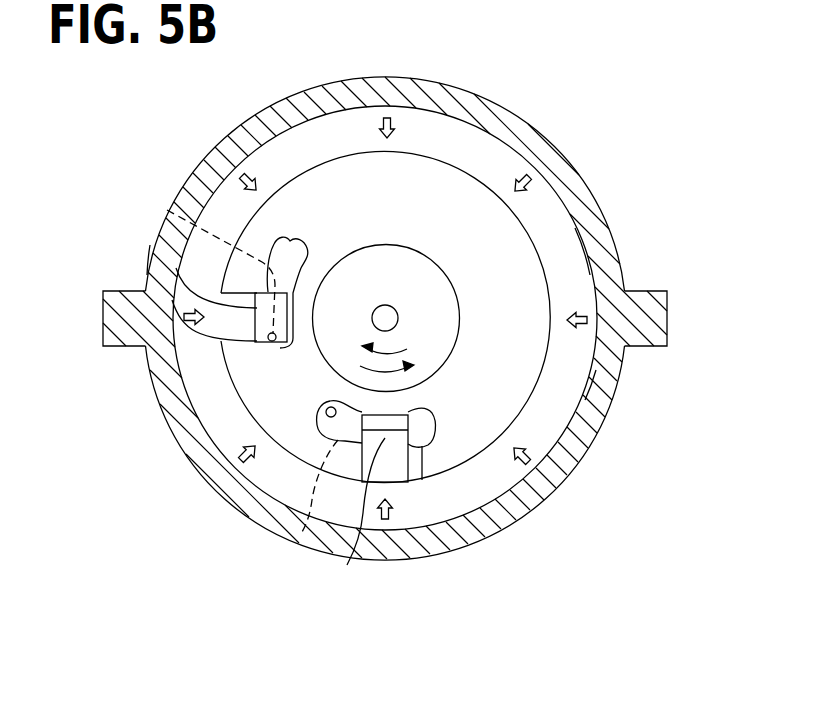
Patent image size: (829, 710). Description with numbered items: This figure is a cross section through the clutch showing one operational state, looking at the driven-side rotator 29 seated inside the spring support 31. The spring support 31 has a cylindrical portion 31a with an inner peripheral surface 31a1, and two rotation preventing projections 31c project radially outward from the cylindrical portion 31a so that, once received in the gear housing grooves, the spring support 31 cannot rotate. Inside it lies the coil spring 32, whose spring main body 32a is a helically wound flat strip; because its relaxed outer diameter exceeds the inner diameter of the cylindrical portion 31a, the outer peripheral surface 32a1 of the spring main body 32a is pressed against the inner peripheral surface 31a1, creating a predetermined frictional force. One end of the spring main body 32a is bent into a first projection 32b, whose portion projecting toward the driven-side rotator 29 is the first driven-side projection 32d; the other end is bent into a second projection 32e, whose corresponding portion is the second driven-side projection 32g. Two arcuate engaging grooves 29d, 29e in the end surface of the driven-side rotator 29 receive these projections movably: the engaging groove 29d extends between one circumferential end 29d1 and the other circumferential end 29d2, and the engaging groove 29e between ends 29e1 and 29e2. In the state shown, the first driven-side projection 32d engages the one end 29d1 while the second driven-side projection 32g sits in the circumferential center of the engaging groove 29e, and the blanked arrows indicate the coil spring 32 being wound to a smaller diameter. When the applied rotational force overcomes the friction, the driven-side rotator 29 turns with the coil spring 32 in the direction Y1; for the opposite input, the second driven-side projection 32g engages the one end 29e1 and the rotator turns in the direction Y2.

The driven-side rotator 29 is at (403, 218).
The engaging groove 29d is at (210, 200).
The one circumferential end of engaging groove 29d1 is at (290, 346).
The other circumferential end of engaging groove 29d2 is at (297, 251).
The engaging groove 29e is at (408, 484).
The one circumferential end of engaging groove 29e1 is at (326, 410).
The other circumferential end of engaging groove 29e2 is at (455, 398).
The spring support 31 is at (546, 142).
The cylindrical portion 31a is at (596, 226).
The inner peripheral surface 31a1 is at (588, 260).
The rotation preventing projection 31c is at (112, 313).
The coil spring 32 is at (553, 218).
The spring main body 32a is at (572, 403).
The outer peripheral surface 32a1 is at (592, 386).
The first projection 32b is at (157, 253).
The first driven-side projection 32d is at (167, 209).
The second projection 32e is at (347, 565).
The second driven-side projection 32g is at (302, 532).
The rotational direction Y1 is at (401, 352).
The rotational direction Y2 is at (366, 331).